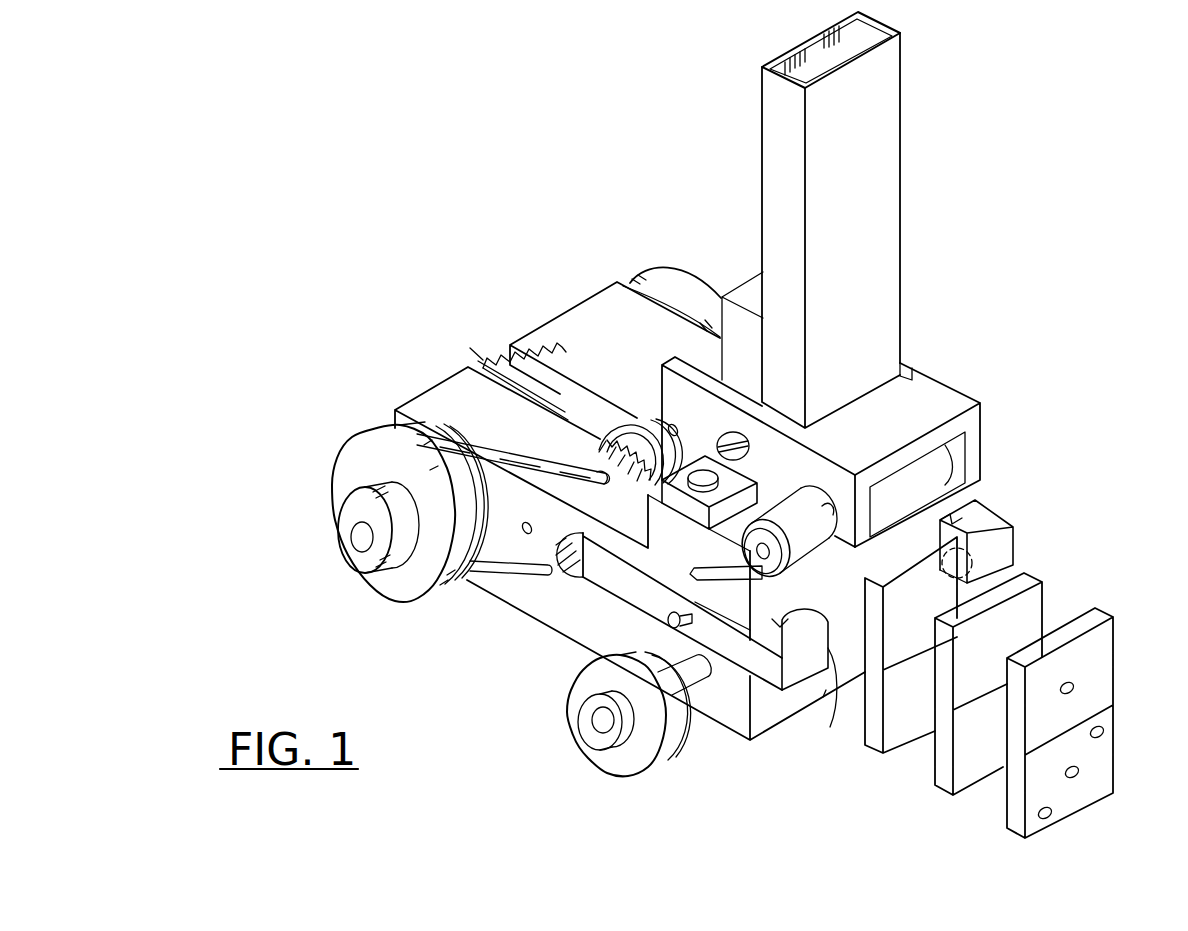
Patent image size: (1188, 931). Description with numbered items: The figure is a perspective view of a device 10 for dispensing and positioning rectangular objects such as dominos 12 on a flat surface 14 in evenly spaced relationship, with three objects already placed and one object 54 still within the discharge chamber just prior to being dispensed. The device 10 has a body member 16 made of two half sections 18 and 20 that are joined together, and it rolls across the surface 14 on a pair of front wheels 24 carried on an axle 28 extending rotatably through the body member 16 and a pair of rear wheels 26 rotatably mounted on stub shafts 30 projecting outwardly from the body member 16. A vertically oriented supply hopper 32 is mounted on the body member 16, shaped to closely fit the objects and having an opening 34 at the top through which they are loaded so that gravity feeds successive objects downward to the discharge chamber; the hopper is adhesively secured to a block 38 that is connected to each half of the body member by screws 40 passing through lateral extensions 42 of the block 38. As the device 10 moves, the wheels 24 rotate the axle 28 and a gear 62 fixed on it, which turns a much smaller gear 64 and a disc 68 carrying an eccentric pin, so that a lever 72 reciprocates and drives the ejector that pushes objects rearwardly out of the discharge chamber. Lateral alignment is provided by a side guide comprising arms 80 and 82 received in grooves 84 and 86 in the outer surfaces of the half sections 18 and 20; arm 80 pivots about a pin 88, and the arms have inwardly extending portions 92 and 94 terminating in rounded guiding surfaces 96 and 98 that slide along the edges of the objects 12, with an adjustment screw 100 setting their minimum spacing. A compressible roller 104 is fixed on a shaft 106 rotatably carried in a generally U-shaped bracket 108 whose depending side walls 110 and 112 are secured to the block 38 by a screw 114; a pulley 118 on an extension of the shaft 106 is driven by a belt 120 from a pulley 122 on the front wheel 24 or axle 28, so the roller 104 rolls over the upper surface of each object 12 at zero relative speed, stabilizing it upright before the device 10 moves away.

The device 10 is at (1017, 303).
The dominos 12 is at (1027, 567).
The flat surface 14 is at (688, 798).
The body member 16 is at (483, 653).
The half section 18 is at (437, 378).
The half section 20 is at (573, 298).
The front wheels 24 is at (643, 278).
The rear wheels 26 is at (593, 750).
The axle 28 is at (357, 550).
The stub shafts 30 is at (673, 668).
The supply hopper 32 is at (887, 212).
The opening 34 is at (866, 33).
The block 38 is at (748, 292).
The screws 40 is at (705, 468).
The lateral extensions 42 is at (693, 508).
The left-most object 54 is at (823, 697).
The gear 62 is at (497, 365).
The gear 64 is at (613, 440).
The disc 68 is at (625, 423).
The lever 72 is at (648, 415).
The arm 80 is at (733, 650).
The arm 82 is at (980, 528).
The groove 84 is at (575, 558).
The groove 86 is at (950, 516).
The pin 88 is at (607, 495).
The inwardly extending portion 92 is at (803, 633).
The inwardly extending portion 94 is at (997, 550).
The guiding surface 96 is at (834, 712).
The guiding surface 98 is at (936, 580).
The adjustment screw 100 is at (684, 614).
The roller 104 is at (950, 453).
The shaft 106 is at (826, 508).
The U-shaped bracket 108 is at (942, 403).
The side wall 110 is at (788, 427).
The side wall 112 is at (913, 367).
The screw 114 is at (733, 432).
The pulley 118 is at (747, 543).
The belt 120 is at (533, 453).
The pulley 122 is at (493, 528).